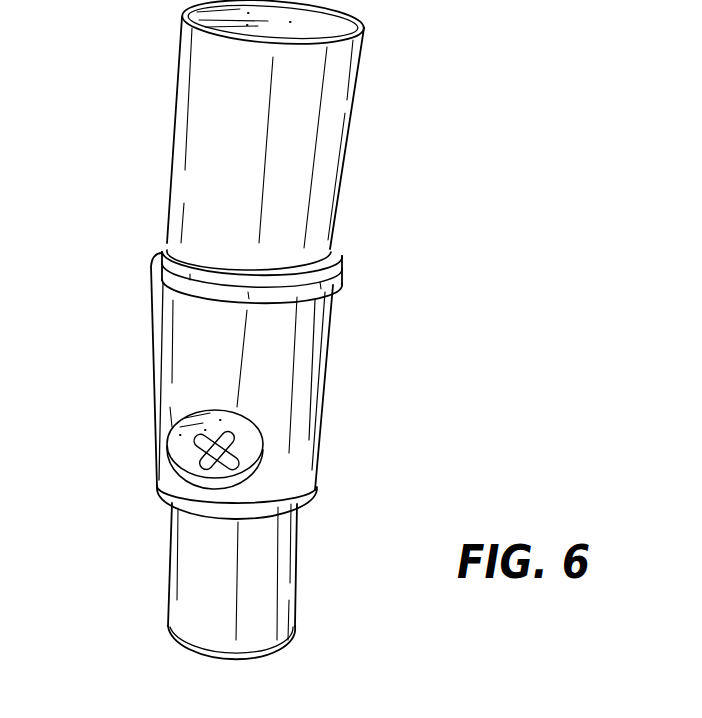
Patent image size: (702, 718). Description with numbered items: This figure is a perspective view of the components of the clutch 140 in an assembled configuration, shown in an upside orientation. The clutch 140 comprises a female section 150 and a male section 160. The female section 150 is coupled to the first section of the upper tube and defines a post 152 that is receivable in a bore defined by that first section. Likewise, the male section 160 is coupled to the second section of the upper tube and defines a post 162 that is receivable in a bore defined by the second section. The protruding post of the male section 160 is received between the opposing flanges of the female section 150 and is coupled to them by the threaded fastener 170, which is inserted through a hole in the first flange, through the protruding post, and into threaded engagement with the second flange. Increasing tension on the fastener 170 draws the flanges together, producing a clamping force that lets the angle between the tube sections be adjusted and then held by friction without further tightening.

The clutch 140 is at (405, 312).
The female section 150 is at (148, 205).
The post 152 is at (205, 98).
The male section 160 is at (311, 533).
The post 162 is at (277, 583).
The threaded fastener 170 is at (203, 447).